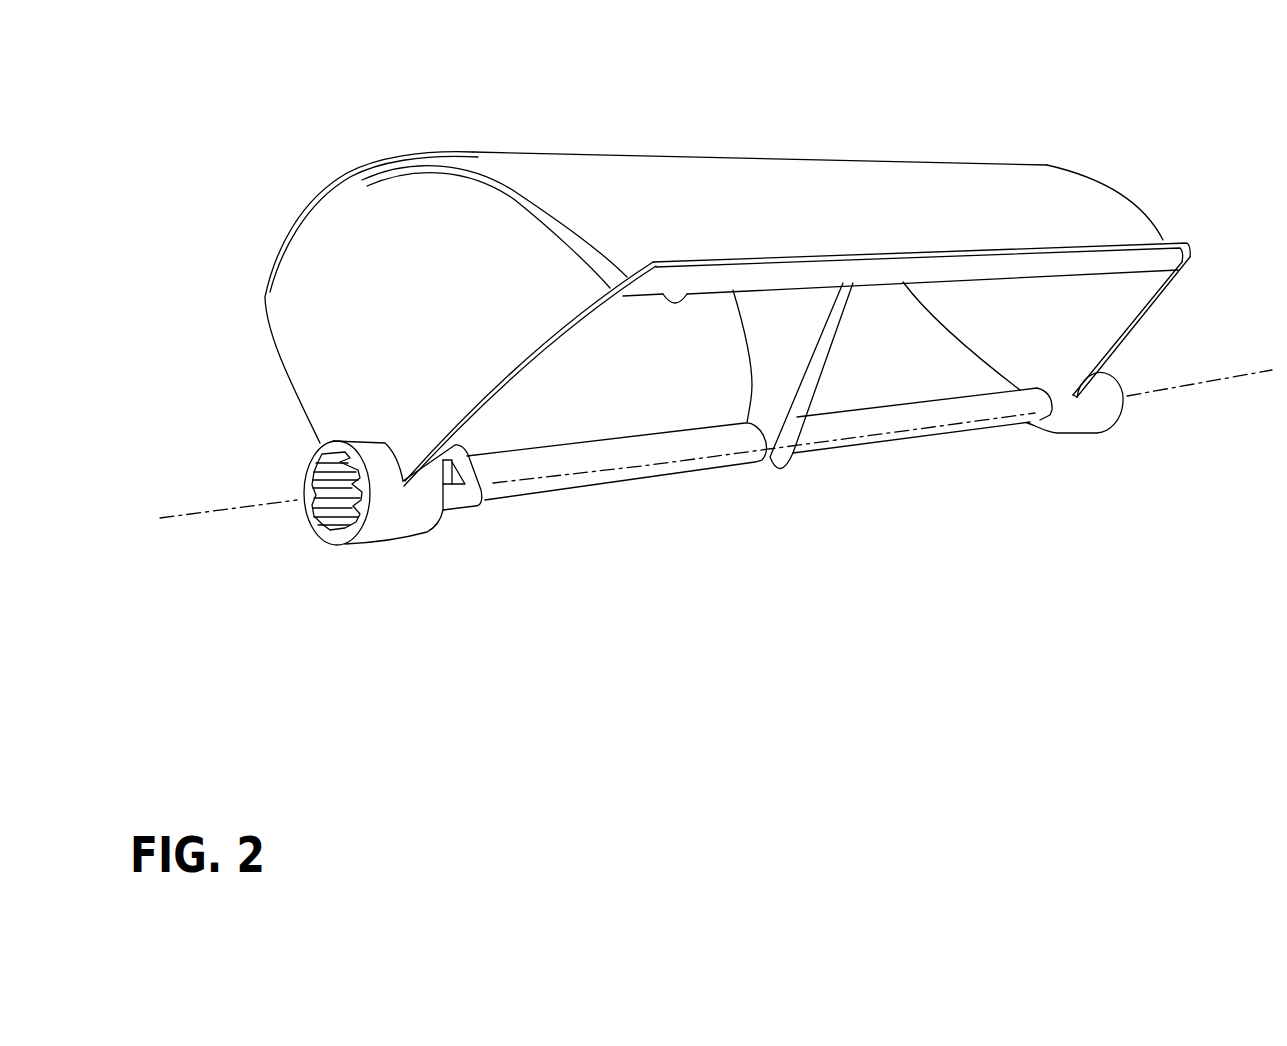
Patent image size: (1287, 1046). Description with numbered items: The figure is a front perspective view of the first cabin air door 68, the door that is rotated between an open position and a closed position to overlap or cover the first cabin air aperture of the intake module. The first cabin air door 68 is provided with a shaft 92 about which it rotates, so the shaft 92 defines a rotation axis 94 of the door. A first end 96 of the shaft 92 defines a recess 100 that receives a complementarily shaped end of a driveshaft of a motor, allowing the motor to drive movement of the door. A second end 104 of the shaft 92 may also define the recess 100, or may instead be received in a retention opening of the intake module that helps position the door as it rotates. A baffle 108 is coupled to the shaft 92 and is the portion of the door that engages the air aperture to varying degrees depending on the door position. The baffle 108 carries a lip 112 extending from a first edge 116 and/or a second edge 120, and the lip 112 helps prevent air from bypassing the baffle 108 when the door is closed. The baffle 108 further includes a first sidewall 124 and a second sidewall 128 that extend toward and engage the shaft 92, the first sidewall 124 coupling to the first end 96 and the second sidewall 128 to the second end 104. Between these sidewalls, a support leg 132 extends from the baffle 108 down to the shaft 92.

The first cabin air door 68 is at (225, 155).
The shaft 92 is at (672, 457).
The rotation axis 94 is at (207, 520).
The first end 96 is at (347, 438).
The recess 100 is at (313, 482).
The second end 104 is at (1127, 377).
The baffle 108 is at (604, 158).
The lip 112 is at (950, 263).
The first edge 116 is at (687, 295).
The second edge 120 is at (263, 297).
The first sidewall 124 is at (377, 263).
The second sidewall 128 is at (1113, 307).
The support leg 132 is at (797, 368).